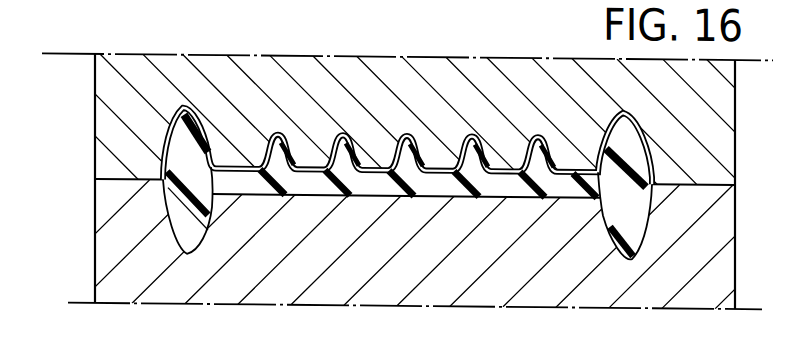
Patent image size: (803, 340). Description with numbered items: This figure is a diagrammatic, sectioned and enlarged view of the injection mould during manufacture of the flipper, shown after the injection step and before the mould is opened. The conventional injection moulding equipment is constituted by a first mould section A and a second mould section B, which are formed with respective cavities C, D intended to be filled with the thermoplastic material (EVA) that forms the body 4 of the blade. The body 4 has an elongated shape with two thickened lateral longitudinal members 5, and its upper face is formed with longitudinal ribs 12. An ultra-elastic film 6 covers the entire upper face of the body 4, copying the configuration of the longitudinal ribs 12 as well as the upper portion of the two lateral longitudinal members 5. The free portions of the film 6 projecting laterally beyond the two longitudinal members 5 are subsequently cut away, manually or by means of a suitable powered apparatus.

The body 4 is at (392, 184).
The lateral longitudinal members 5 is at (187, 210).
The ultra-elastic film 6 is at (170, 117).
The longitudinal ribs 12 is at (404, 129).
The first mould section A is at (707, 118).
The second mould section B is at (713, 261).
The cavity C is at (279, 129).
The cavity D is at (461, 191).